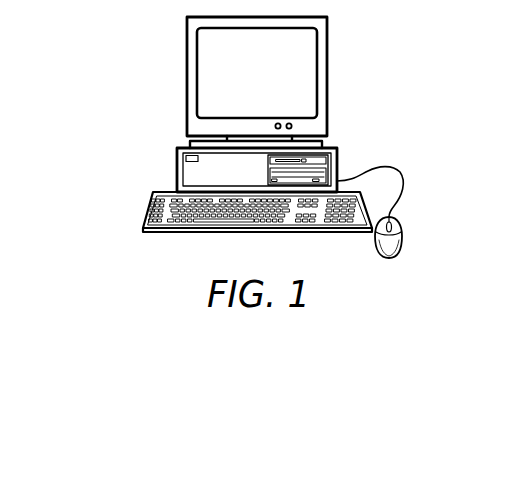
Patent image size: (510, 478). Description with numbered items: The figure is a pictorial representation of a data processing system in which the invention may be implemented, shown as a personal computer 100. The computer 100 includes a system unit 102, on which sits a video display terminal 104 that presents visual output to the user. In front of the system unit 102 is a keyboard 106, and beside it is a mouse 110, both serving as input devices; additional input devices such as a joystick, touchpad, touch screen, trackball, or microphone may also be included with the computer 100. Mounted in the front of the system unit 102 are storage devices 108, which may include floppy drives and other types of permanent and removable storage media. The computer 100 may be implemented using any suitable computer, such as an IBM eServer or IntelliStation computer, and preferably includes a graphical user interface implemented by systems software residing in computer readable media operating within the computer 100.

The computer 100 is at (127, 67).
The system unit 102 is at (177, 162).
The video display terminal 104 is at (327, 76).
The keyboard 106 is at (172, 233).
The storage devices 108 is at (303, 157).
The mouse 110 is at (390, 258).